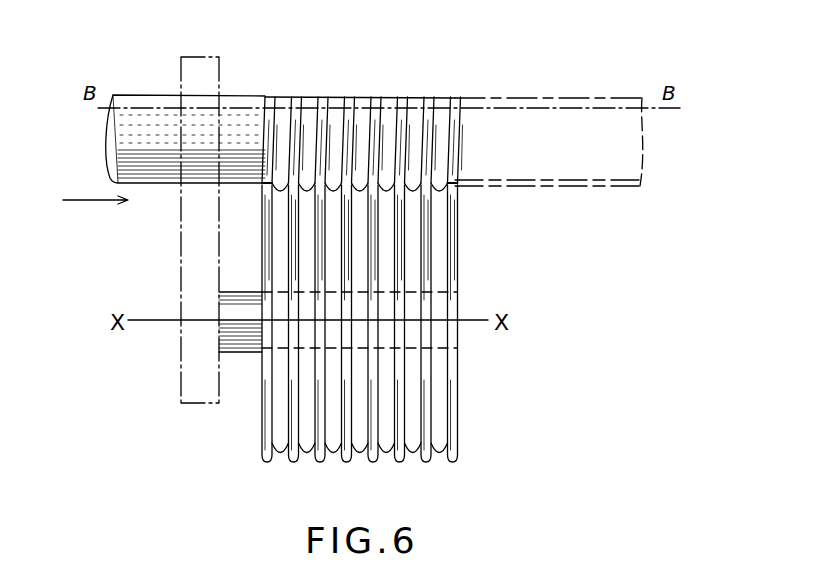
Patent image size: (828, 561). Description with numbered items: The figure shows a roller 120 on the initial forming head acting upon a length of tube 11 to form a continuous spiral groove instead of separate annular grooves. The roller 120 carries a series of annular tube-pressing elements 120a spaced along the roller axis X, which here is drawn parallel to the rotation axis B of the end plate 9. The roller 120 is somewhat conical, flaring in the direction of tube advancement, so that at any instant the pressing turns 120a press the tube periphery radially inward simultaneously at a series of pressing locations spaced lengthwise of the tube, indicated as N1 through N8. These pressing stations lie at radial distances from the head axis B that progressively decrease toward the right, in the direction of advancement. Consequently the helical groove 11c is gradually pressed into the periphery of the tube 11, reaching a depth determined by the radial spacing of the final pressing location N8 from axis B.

The tube 11 is at (118, 140).
The helical groove 11c is at (358, 98).
The end plate 9 is at (180, 281).
The roller 120 is at (262, 441).
The annular tube-pressing elements 120a is at (343, 460).
The first pressing location N1 is at (272, 183).
The final pressing location N8 is at (450, 183).